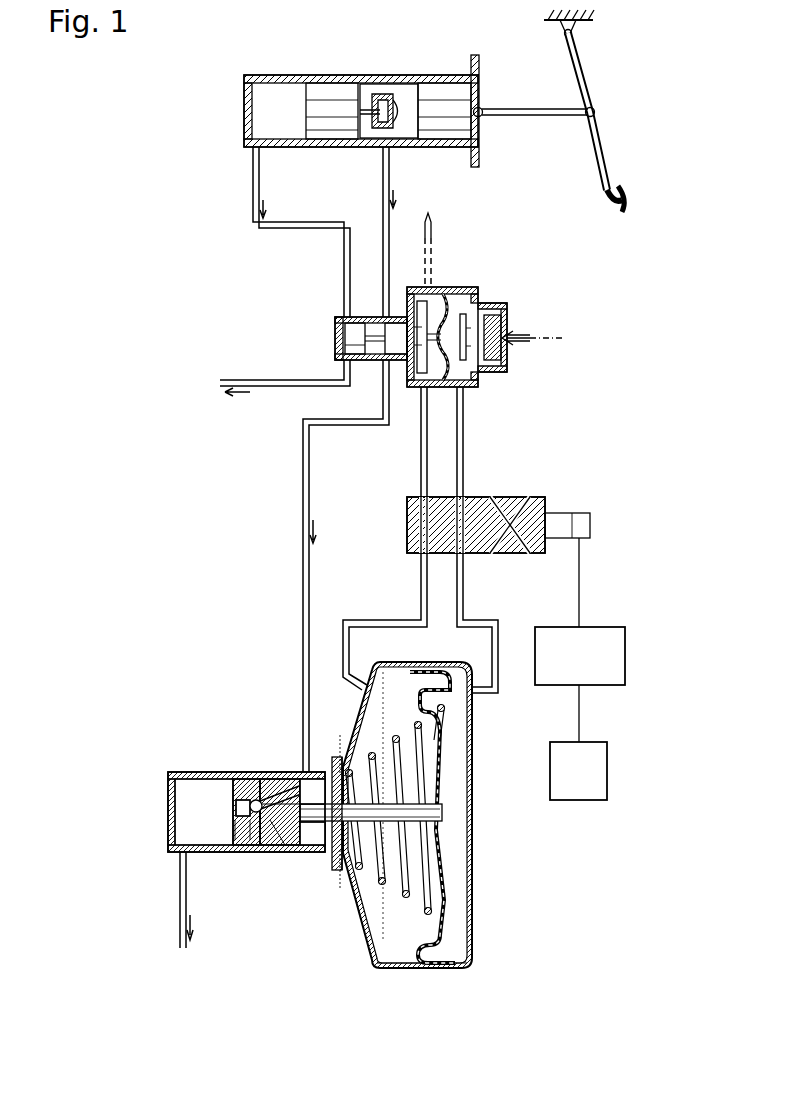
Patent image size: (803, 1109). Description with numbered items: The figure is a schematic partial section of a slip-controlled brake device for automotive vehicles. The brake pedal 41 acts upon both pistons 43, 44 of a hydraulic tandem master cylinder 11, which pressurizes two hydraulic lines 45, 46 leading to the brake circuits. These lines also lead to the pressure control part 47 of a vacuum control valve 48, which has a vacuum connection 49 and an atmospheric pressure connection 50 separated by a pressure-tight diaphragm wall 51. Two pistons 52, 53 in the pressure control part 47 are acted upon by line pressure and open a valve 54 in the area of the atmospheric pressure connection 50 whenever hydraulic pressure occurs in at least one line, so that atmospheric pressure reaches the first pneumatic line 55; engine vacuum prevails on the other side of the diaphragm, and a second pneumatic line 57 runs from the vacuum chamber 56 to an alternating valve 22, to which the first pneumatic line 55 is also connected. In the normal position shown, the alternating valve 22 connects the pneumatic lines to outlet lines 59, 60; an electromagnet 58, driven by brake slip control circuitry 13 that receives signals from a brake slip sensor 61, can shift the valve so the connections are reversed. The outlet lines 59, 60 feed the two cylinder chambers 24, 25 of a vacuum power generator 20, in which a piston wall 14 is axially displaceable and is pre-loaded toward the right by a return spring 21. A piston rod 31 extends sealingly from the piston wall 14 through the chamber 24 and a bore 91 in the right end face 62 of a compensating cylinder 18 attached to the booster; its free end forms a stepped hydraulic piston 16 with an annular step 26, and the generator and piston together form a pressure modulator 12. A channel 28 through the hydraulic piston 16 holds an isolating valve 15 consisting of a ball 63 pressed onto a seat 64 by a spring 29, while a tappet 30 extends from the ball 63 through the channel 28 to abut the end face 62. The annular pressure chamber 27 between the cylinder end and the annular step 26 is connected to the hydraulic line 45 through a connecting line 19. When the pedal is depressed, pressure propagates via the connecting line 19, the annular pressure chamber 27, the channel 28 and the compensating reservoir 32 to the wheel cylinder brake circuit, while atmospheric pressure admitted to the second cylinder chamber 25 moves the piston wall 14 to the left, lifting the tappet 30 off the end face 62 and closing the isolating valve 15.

The hydraulic tandem master cylinder 11 is at (278, 78).
The pressure modulator 12 is at (176, 764).
The brake slip control circuitry 13 is at (601, 630).
The piston wall 14 is at (440, 882).
The isolating valve 15 is at (232, 790).
The hydraulic piston 16 is at (232, 832).
The compensating cylinder 18 is at (168, 796).
The connecting line 19 is at (303, 450).
The vacuum power generator 20 is at (396, 968).
The return spring 21 is at (403, 897).
The alternating valve 22 is at (542, 497).
The cylinder chamber 24 is at (358, 706).
The cylinder chamber 25 is at (446, 755).
The annular step 26 is at (292, 846).
The annular pressure chamber 27 is at (318, 840).
The channel 28 is at (276, 832).
The spring 29 is at (255, 812).
The tappet 30 is at (300, 780).
The piston rod 31 is at (410, 812).
The compensating reservoir 32 is at (183, 824).
The brake pedal 41 is at (600, 184).
The piston 43 is at (452, 130).
The piston 44 is at (333, 130).
The hydraulic line 45 is at (391, 179).
The hydraulic line 46 is at (263, 179).
The pressure control part 47 is at (336, 338).
The vacuum control valve 48 is at (504, 296).
The vacuum connection 49 is at (443, 292).
The atmospheric pressure connection 50 is at (512, 332).
The diaphragm wall 51 is at (463, 312).
The piston 52 is at (392, 320).
The piston 53 is at (352, 318).
The valve 54 is at (470, 386).
The first pneumatic line 55 is at (463, 447).
The vacuum chamber 56 is at (422, 290).
The second pneumatic line 57 is at (421, 446).
The electromagnet 58 is at (588, 527).
The outlet line 59 is at (463, 584).
The outlet line 60 is at (421, 584).
The brake slip sensor 61 is at (592, 751).
The end face 62 is at (350, 880).
The ball 63 is at (250, 800).
The seat 64 is at (265, 782).
The bore 91 is at (330, 770).